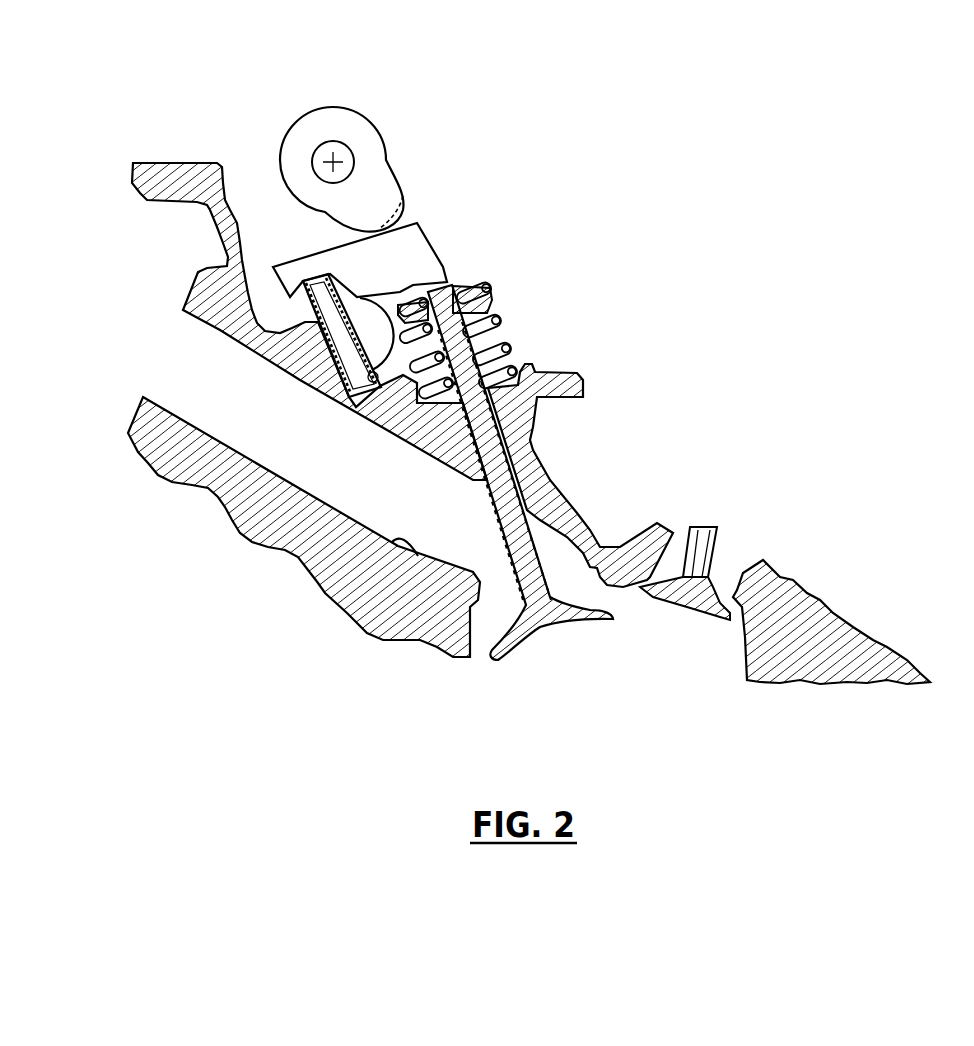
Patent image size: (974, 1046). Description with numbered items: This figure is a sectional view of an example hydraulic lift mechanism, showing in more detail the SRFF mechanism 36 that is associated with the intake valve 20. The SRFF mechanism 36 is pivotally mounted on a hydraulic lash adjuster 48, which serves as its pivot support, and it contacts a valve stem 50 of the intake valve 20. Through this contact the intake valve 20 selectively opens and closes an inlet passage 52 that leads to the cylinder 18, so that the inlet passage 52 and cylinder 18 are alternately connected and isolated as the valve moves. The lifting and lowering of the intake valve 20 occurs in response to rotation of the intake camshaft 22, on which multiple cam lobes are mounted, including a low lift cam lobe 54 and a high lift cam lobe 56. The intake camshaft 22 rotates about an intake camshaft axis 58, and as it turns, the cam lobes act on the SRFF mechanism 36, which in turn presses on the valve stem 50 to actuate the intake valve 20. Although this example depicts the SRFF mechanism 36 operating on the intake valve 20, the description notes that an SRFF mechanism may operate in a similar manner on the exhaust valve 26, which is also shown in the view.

The cylinder 18 is at (744, 650).
The intake valve 20 is at (543, 563).
The intake camshaft 22 is at (338, 142).
The exhaust valve 26 is at (713, 552).
The SRFF mechanism 36 is at (512, 180).
The hydraulic lash adjuster 48 is at (300, 358).
The valve stem 50 is at (450, 283).
The inlet passage 52 is at (393, 542).
The low lift cam lobe 54 is at (387, 137).
The high lift cam lobe 56 is at (405, 200).
The intake camshaft axis 58 is at (317, 152).